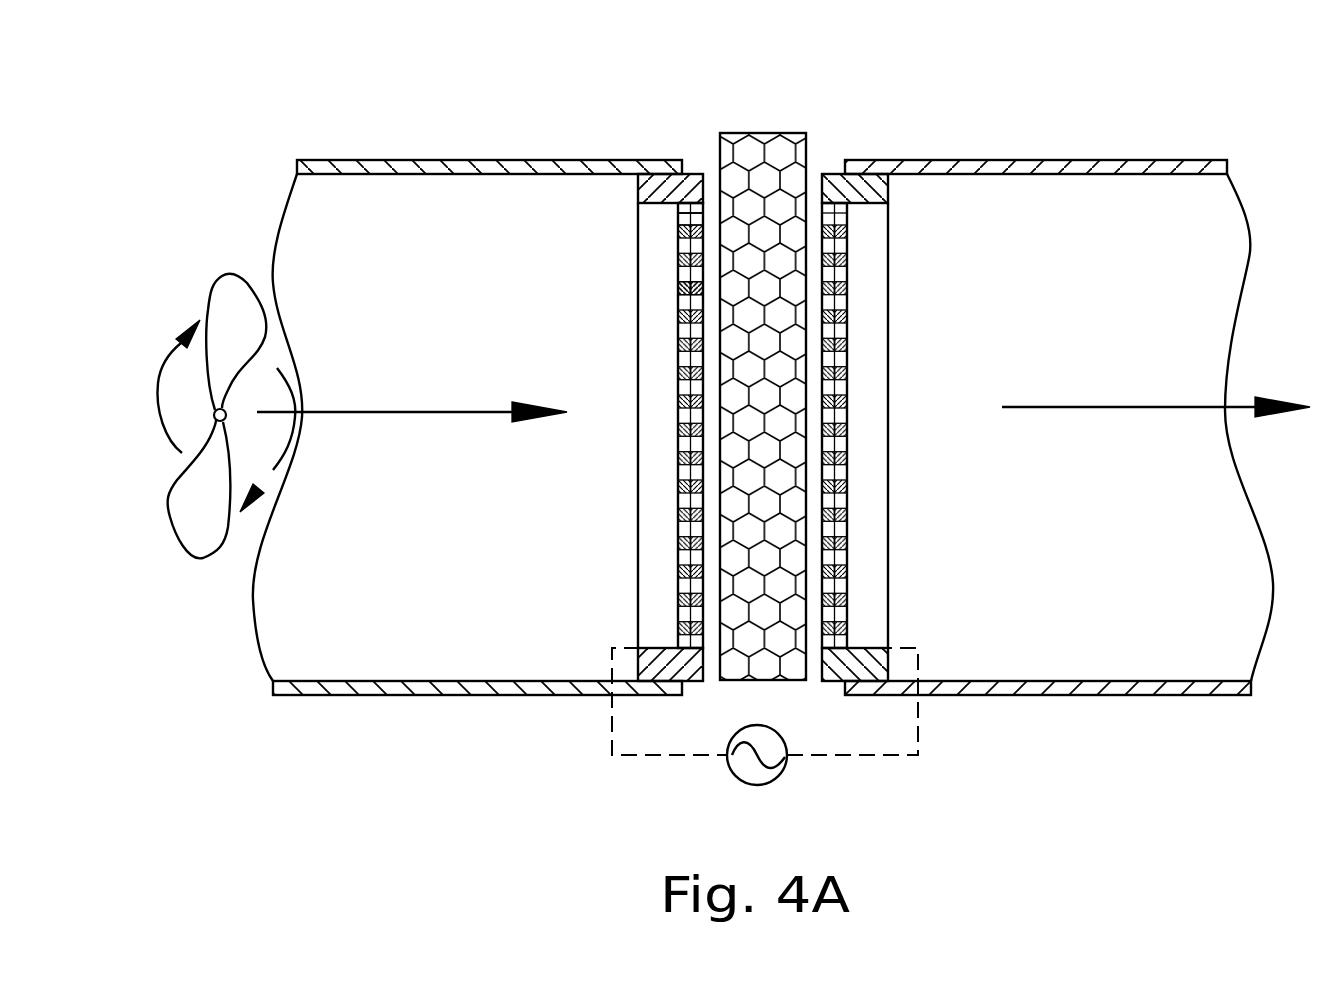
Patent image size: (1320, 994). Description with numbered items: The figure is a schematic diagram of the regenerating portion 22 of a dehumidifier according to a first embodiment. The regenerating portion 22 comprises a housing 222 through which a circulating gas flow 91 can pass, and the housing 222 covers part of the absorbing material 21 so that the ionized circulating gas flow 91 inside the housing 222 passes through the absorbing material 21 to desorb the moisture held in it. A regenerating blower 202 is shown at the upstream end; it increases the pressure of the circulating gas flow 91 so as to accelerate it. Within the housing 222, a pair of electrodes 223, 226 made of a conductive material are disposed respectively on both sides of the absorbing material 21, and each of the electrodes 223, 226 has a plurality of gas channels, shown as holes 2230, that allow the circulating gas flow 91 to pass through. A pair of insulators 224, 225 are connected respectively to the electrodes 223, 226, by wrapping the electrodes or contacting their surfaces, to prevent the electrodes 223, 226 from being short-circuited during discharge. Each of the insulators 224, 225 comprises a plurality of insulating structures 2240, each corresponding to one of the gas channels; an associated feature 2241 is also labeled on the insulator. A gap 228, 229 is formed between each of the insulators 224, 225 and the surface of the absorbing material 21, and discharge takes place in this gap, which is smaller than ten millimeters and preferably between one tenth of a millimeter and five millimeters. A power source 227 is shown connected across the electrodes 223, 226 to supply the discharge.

The absorbing material 21 is at (784, 118).
The regenerating portion 22 is at (763, 395).
The housing 222 is at (450, 692).
The electrode 223 is at (682, 262).
The holes 2230 is at (683, 303).
The insulator 224 is at (670, 163).
The insulating structures 2240 is at (690, 232).
The insulating layer 2241 is at (692, 220).
The insulator 225 is at (856, 164).
The electrode 226 is at (847, 322).
The power supply 227 is at (772, 772).
The gap 228 is at (712, 180).
The gap 229 is at (812, 178).
The regenerating blower 202 is at (227, 302).
The circulating gas flow 91 is at (402, 412).